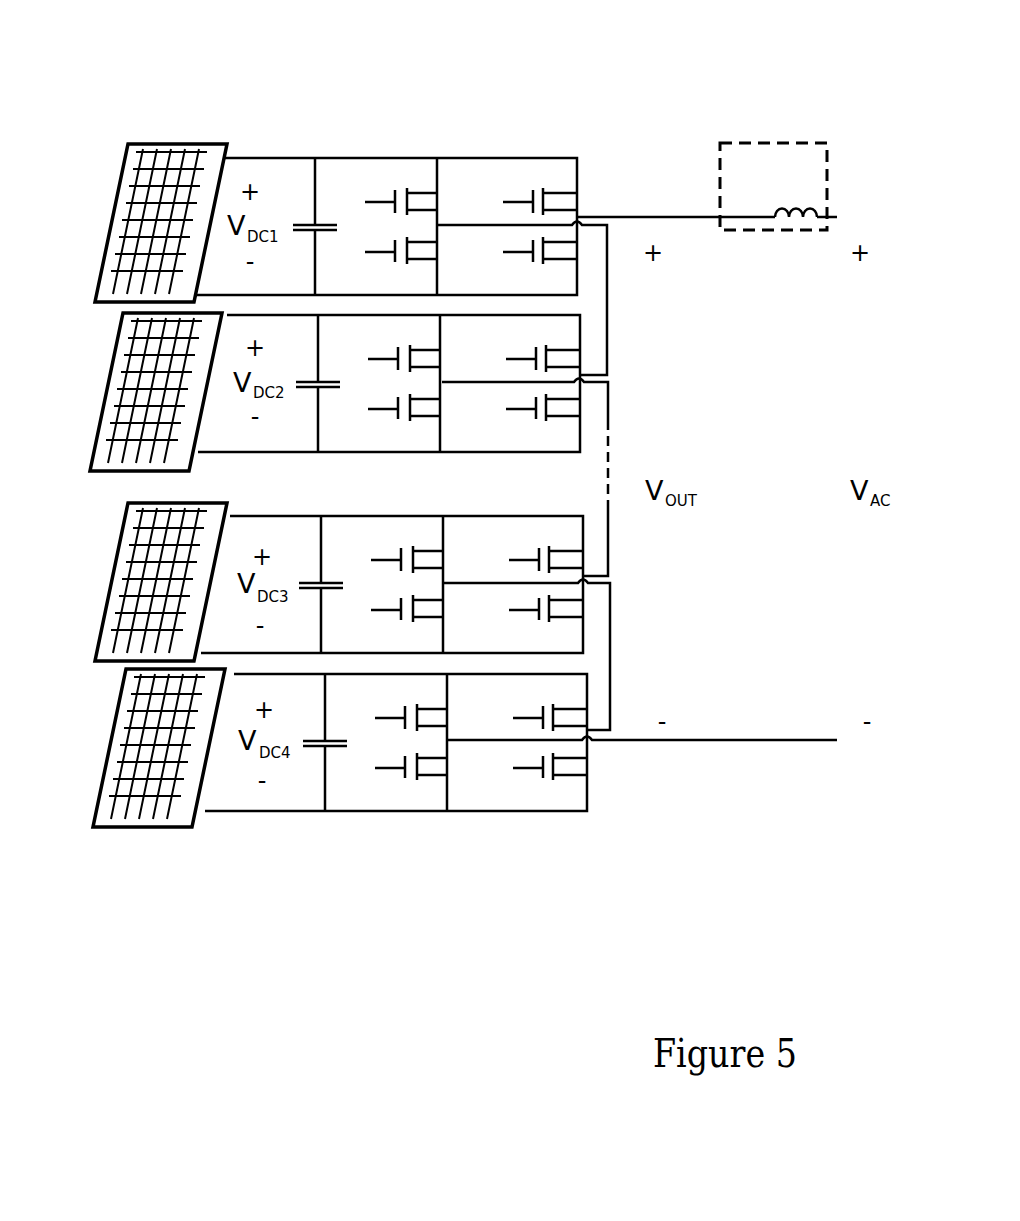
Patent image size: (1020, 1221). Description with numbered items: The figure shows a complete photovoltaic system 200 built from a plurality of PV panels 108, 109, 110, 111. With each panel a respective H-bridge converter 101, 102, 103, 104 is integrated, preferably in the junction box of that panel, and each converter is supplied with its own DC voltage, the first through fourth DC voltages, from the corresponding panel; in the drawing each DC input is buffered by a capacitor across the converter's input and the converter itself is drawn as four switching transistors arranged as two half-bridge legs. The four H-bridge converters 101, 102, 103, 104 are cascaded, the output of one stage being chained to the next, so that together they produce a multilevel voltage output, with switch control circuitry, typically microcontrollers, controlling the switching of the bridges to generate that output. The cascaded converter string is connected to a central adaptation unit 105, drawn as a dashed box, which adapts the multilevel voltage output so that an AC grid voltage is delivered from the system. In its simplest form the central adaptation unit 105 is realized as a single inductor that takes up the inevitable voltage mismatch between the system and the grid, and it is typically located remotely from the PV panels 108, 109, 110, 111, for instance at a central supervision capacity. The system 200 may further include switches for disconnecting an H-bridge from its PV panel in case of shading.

The photovoltaic system 200 is at (641, 59).
The H-bridge converter 101 is at (482, 141).
The H-bridge converter 102 is at (461, 469).
The H-bridge converter 103 is at (445, 503).
The H-bridge converter 104 is at (477, 823).
The central adaptation unit 105 is at (735, 143).
The PV panel 108 is at (108, 181).
The PV panel 109 is at (103, 349).
The PV panel 110 is at (111, 539).
The PV panel 111 is at (103, 719).